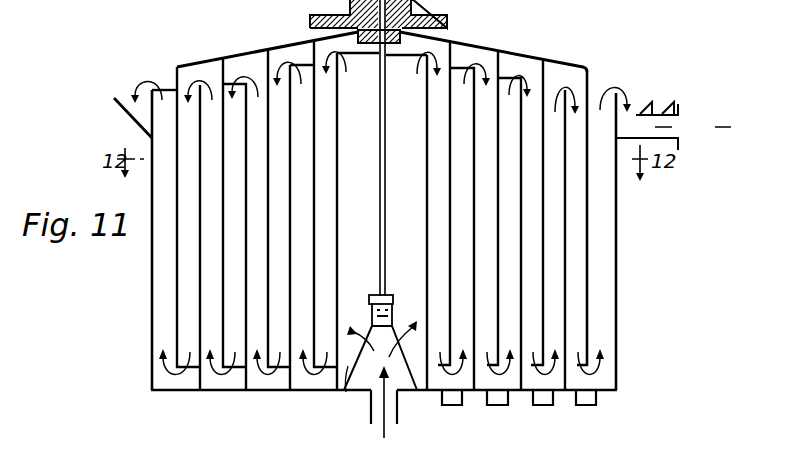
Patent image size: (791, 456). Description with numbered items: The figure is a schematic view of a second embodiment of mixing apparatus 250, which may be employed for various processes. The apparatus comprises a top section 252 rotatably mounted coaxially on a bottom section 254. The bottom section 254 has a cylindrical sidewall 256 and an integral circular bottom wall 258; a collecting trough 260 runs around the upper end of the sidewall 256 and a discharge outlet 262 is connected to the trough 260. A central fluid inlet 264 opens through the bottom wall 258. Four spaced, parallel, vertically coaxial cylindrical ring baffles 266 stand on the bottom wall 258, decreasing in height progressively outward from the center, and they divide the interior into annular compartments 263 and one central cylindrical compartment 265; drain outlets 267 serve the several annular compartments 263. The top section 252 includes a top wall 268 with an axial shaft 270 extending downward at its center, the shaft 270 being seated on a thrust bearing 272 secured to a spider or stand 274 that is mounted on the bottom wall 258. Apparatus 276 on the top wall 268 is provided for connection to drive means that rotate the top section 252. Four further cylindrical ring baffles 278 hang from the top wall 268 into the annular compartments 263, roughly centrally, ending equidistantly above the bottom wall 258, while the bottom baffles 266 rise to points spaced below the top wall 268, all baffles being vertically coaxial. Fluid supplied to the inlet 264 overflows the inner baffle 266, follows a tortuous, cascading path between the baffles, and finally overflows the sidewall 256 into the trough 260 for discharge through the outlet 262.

The mixing apparatus 250 is at (143, 301).
The top section 252 is at (578, 59).
The bottom section 254 is at (626, 366).
The cylindrical sidewall 256 is at (618, 338).
The bottom wall 258 is at (165, 395).
The collecting trough 260 is at (113, 100).
The discharge outlet 262 is at (665, 101).
The annular compartments 263 is at (245, 420).
The central fluid inlet 264 is at (371, 420).
The central cylindrical compartment 265 is at (417, 390).
The cylindrical ring baffles 266 is at (337, 230).
The drain outlets 267 is at (455, 407).
The top wall 268 is at (205, 62).
The axial shaft 270 is at (386, 105).
The thrust bearing 272 is at (400, 303).
The spider or stand 274 is at (346, 393).
The apparatus for connection to drive means 276 is at (428, 7).
The cylindrical ring baffles 278 is at (497, 204).